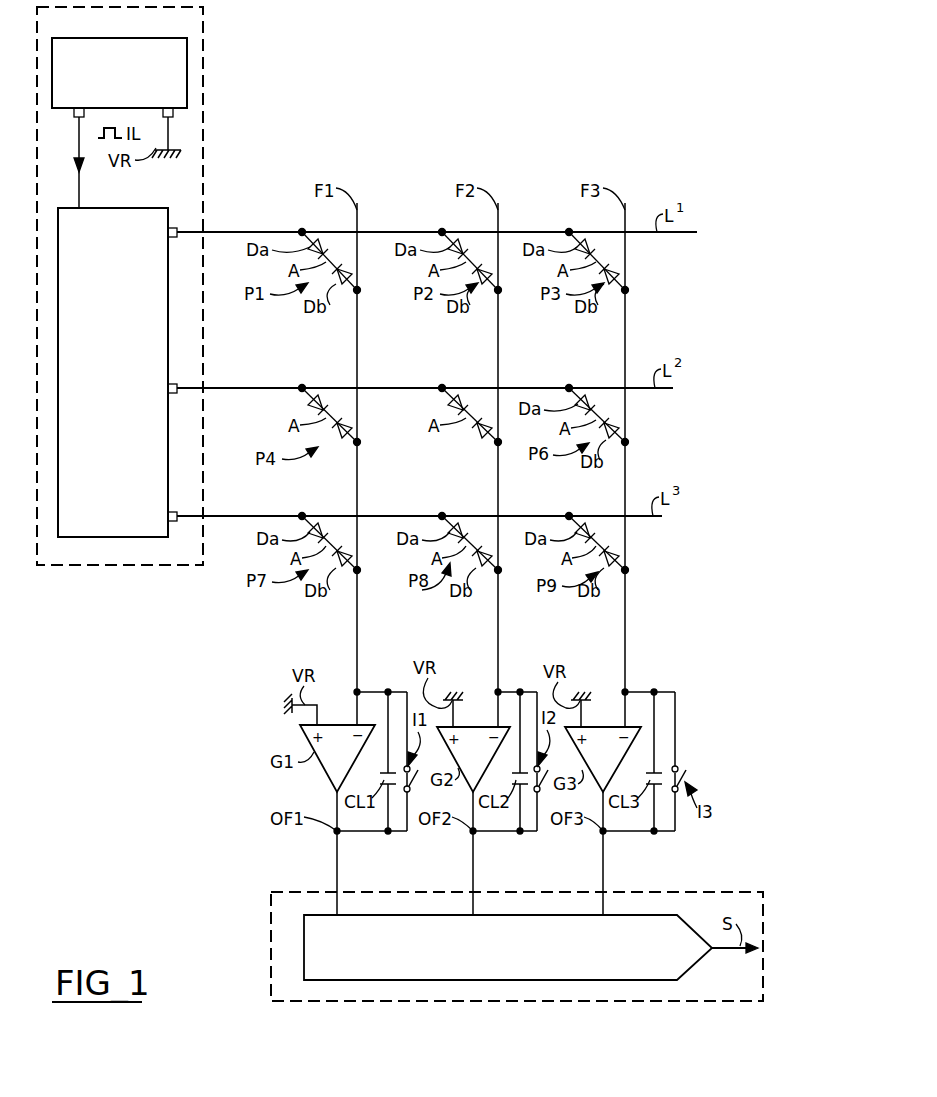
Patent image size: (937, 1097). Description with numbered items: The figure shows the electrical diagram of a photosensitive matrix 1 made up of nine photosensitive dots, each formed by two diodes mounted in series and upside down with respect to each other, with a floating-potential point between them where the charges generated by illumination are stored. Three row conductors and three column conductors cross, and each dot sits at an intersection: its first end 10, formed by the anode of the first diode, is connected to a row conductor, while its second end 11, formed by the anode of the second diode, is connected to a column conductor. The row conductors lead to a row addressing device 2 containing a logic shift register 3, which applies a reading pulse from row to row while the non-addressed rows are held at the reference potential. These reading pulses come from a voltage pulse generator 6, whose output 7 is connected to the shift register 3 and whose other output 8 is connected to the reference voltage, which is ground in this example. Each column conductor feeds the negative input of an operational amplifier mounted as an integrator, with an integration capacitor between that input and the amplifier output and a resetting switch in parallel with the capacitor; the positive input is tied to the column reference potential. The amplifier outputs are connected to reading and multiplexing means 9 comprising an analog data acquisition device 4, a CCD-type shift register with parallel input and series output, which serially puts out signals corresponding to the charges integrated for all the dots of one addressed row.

The photosensitive matrix 1 is at (222, 688).
The row addressing device 2 is at (112, 565).
The logic shift register 3 is at (88, 537).
The analog data acquisition device 4 is at (304, 948).
The voltage pulse generator 6 is at (150, 38).
The output 7 is at (74, 113).
The other output 8 is at (173, 117).
The reading and multiplexing means 9 is at (271, 962).
The first end 10 is at (302, 232).
The second end 11 is at (357, 290).